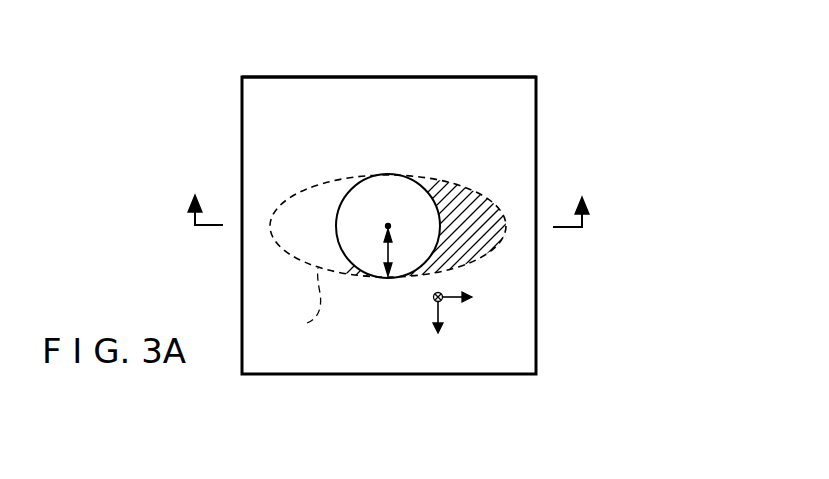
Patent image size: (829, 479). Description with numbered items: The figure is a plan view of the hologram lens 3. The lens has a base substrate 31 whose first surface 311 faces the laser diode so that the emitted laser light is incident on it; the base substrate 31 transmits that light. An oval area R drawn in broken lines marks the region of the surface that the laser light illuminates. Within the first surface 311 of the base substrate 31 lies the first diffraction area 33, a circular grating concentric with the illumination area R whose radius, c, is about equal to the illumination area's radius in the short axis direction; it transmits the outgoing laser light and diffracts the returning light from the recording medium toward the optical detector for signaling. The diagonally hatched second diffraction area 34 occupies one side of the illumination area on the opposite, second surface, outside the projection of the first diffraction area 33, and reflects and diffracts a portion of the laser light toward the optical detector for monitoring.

The hologram lens 3 is at (650, 84).
The base substrate 31 is at (523, 307).
The first surface 311 is at (523, 92).
The first diffraction area 33 is at (390, 178).
The second diffraction area 34 is at (480, 191).